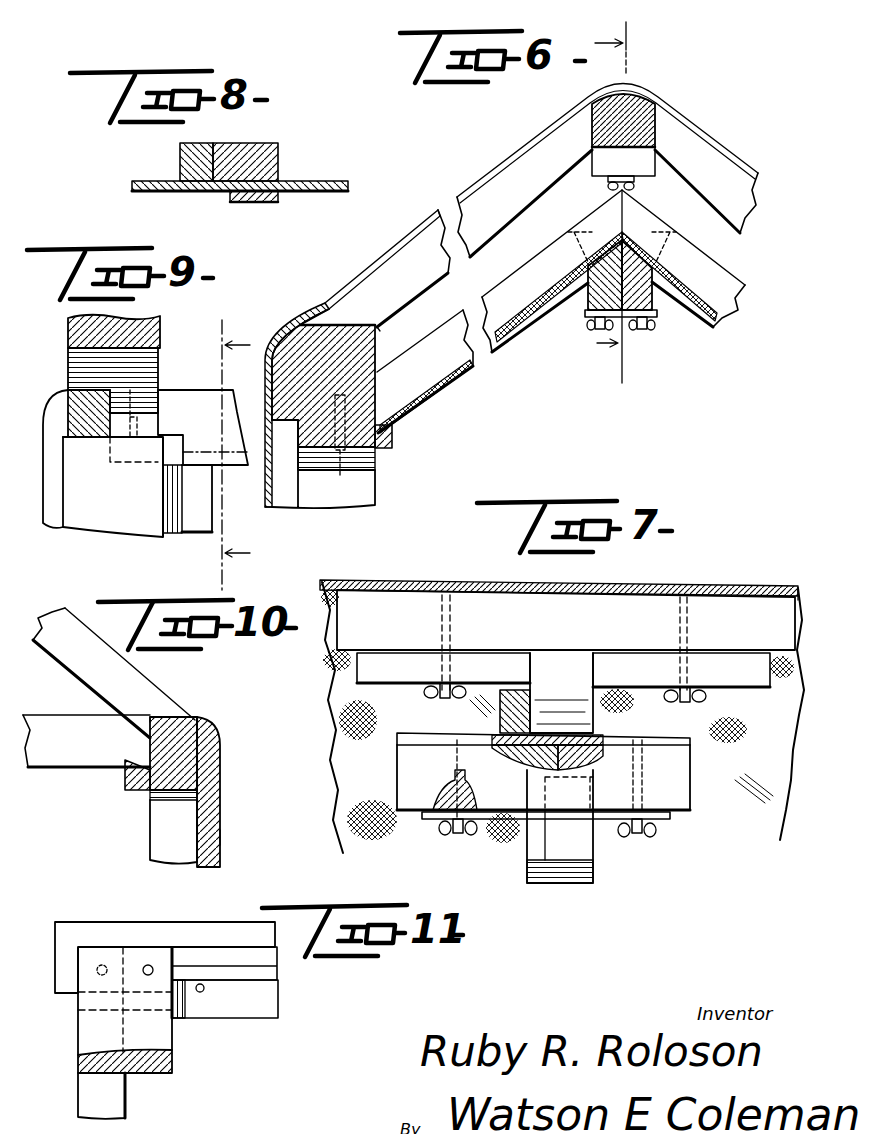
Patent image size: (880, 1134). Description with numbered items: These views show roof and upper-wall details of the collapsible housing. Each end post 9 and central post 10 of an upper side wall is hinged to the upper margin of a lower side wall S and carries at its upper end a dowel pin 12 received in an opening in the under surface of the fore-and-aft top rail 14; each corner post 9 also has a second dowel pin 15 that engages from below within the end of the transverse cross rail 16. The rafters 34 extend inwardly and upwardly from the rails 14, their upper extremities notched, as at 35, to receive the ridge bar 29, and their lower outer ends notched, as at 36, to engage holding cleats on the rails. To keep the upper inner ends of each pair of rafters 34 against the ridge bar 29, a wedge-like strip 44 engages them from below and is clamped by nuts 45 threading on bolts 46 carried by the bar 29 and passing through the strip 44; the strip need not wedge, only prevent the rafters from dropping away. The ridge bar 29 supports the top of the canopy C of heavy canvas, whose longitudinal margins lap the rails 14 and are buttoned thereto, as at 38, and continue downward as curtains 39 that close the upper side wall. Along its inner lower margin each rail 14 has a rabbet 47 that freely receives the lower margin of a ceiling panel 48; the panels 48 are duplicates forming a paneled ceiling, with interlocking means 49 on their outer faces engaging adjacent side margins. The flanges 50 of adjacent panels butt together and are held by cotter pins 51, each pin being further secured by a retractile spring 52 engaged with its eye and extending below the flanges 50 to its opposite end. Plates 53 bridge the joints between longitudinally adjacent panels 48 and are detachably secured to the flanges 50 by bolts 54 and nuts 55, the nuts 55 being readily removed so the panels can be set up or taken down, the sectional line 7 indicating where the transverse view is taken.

In FIG. 6, the section line 7— 7 is at (614, 200).
In FIG. 9, the end post 9 is at (110, 523).
In FIG. 10, the end post 9 is at (157, 847).
In FIG. 9, the central post 10 is at (230, 443).
In FIG. 6, the central post 10 is at (368, 492).
In FIG. 9, the dowel pin 12 is at (140, 425).
In FIG. 10, the dowel pin 12 is at (230, 792).
In FIG. 11, the dowel pin 12 is at (153, 965).
In FIG. 6, the dowel pin 12 is at (336, 448).
In FIG. 9, the top rail 14 is at (185, 397).
In FIG. 10, the top rail 14 is at (187, 723).
In FIG. 11, the top rail 14 is at (268, 958).
In FIG. 6, the top rail 14 is at (322, 337).
In FIG. 9, the second dowel pin 15 is at (83, 408).
In FIG. 11, the second dowel pin 15 is at (104, 965).
In FIG. 9, the cross rail 16 is at (72, 423).
In FIG. 10, the cross rail 16 is at (57, 757).
In FIG. 11, the cross rail 16 is at (120, 1100).
In FIG. 7, the ridge bar 29 is at (397, 605).
In FIG. 6, the ridge bar 29 is at (650, 110).
In FIG. 9, the rafter 34 is at (164, 327).
In FIG. 10, the rafter 34 is at (68, 616).
In FIG. 11, the rafter 34 is at (167, 1037).
In FIG. 7, the rafter 34 is at (553, 873).
In FIG. 6, the rafter 34 is at (490, 187).
In FIG. 6, the notch 35 is at (600, 153).
In FIG. 10, the notch 36 is at (152, 724).
In FIG. 6, the notch 36 is at (388, 328).
In FIG. 6, the button fastening 38 is at (270, 375).
In FIG. 6, the curtain 39 is at (262, 497).
In FIG. 7, the wedge-like strip 44 is at (515, 663).
In FIG. 6, the wedge-like strip 44 is at (640, 165).
In FIG. 7, the nut 45 is at (457, 687).
In FIG. 6, the nut 45 is at (631, 188).
In FIG. 7, the bolt 46 is at (437, 633).
In FIG. 9, the rabbet 47 is at (200, 462).
In FIG. 10, the rabbet 47 is at (137, 755).
In FIG. 11, the rabbet 47 is at (263, 1018).
In FIG. 6, the rabbet 47 is at (395, 443).
In FIG. 8, the ceiling panel 48 is at (167, 193).
In FIG. 7, the ceiling panel 48 is at (448, 738).
In FIG. 6, the ceiling panel 48 is at (447, 377).
In FIG. 8, the interlocking means 49 is at (245, 203).
In FIG. 7, the flange 50 is at (403, 777).
In FIG. 6, the flange 50 is at (570, 298).
In FIG. 6, the cotter pin 51 is at (587, 313).
In FIG. 6, the retractile spring 52 is at (652, 305).
In FIG. 7, the plate 53 is at (603, 819).
In FIG. 6, the plate 53 is at (630, 332).
In FIG. 7, the bolt 54 is at (463, 835).
In FIG. 6, the bolt 54 is at (600, 330).
In FIG. 7, the nut 55 is at (447, 830).
In FIG. 6, the nut 55 is at (592, 328).
In FIG. 7, the canopy C is at (765, 597).
In FIG. 6, the canopy C is at (388, 243).
In FIG. 10, the lower side wall S is at (220, 838).